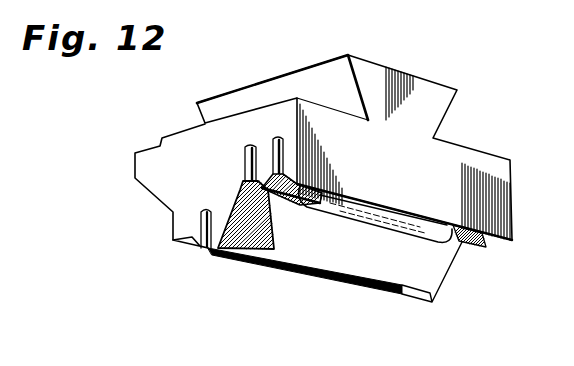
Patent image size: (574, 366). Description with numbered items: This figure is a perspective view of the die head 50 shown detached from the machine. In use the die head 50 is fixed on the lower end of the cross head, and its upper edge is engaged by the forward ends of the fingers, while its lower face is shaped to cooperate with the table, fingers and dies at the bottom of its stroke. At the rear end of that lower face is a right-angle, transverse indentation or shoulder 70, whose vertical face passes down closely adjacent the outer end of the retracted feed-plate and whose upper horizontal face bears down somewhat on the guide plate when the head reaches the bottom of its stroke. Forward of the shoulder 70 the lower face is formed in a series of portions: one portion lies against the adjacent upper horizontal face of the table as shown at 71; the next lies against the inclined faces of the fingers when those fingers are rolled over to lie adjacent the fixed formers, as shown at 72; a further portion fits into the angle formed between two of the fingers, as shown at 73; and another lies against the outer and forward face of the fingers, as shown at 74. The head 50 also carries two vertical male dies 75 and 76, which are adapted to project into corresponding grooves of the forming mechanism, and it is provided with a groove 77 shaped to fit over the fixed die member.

The die head 50 is at (354, 147).
The shoulder 70 is at (172, 213).
The face portion lying against table 71 is at (194, 243).
The face portion lying against inclined finger faces 72 is at (234, 206).
The face portion fitting finger angle 73 is at (263, 190).
The face portion lying against forward finger face 74 is at (281, 176).
The vertical male die 75 is at (337, 223).
The vertical male die 76 is at (389, 214).
The groove 77 is at (350, 281).